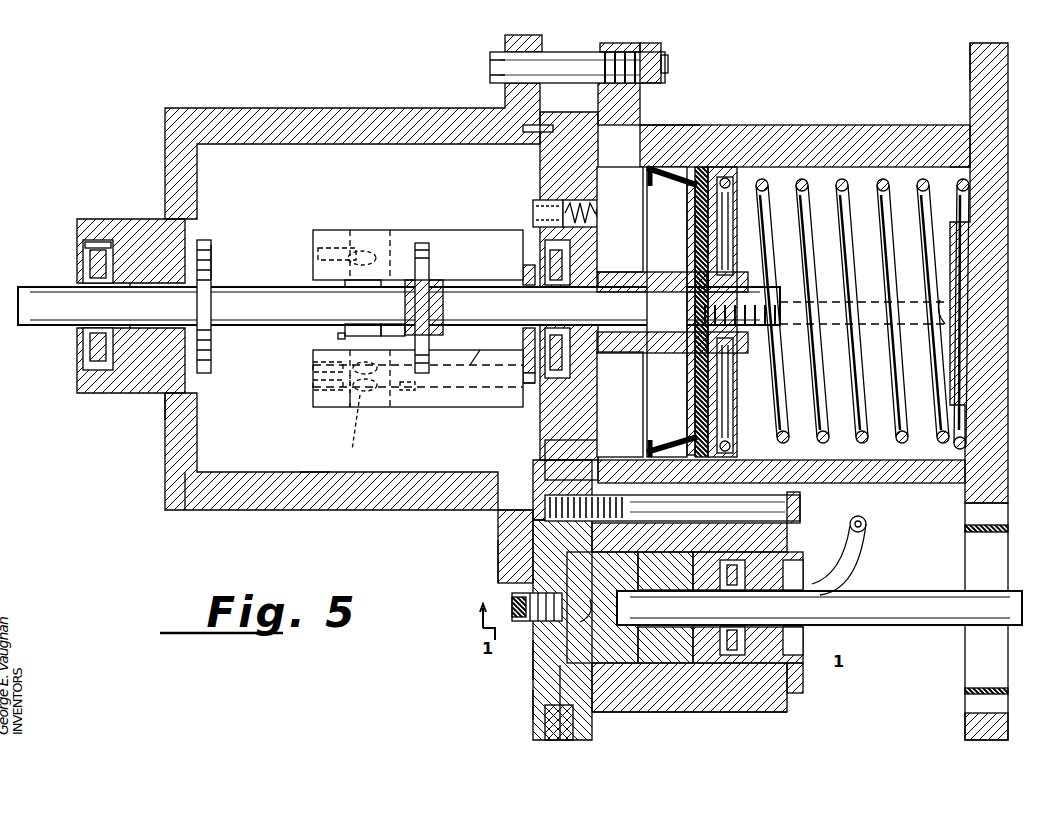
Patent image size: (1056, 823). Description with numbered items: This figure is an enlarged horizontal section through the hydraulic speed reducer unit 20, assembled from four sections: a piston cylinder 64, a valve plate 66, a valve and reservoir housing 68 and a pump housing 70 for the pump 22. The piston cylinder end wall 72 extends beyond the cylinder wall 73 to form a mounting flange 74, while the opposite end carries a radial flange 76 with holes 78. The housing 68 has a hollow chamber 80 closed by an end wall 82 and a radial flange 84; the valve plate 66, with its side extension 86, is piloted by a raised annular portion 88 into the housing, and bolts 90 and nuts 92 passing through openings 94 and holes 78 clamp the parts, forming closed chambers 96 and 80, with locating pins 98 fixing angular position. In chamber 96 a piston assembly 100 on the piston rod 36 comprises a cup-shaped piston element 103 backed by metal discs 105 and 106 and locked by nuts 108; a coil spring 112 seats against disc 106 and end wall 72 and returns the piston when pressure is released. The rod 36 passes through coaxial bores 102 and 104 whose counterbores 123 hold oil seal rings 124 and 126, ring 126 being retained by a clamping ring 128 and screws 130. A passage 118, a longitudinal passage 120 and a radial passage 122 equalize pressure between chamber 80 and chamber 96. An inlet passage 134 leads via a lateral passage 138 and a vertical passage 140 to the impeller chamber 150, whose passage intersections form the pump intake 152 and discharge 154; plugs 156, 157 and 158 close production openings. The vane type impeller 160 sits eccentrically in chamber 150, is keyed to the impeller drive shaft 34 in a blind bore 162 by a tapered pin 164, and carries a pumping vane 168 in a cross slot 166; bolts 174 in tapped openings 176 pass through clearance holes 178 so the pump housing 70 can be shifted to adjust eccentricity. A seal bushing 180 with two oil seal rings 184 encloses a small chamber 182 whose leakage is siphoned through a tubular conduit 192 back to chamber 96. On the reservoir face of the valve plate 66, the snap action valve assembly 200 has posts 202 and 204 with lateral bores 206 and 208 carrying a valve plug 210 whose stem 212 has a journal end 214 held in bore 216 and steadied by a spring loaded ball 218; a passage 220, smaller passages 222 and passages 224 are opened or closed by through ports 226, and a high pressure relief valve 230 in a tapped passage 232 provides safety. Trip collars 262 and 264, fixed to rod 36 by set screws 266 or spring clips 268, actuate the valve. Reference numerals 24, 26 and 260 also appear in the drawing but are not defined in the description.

The speed reducer unit 20 is at (606, 34).
The pump 22 is at (815, 717).
The spring housing 24 is at (737, 101).
The gear housing 26 is at (380, 100).
The impeller drive shaft 34 is at (915, 598).
The piston rod 36 is at (40, 324).
The piston cylinder 64 is at (805, 127).
The valve plate 66 is at (540, 172).
The valve and reservoir housing 68 is at (320, 495).
The pump housing 70 is at (740, 705).
The piston cylinder end wall 72 is at (1005, 150).
The cylinder wall 73 is at (750, 127).
The mounting flange 74 is at (970, 78).
The radial flange 76 is at (640, 108).
The holes 78 is at (615, 53).
The hollow chamber 80 is at (230, 458).
The end wall 82 is at (165, 415).
The radial flange 84 is at (498, 545).
The side extension 86 is at (533, 700).
The raised annular portion 88 is at (533, 470).
The bolts 90 is at (555, 53).
The nuts 92 is at (658, 45).
The openings 94 is at (522, 35).
The chamber 96 is at (880, 165).
The locating pins 98 is at (548, 124).
The piston assembly 100 is at (745, 395).
The bore 102 is at (585, 295).
The piston element 103 is at (660, 168).
The bore 104 is at (135, 285).
The metal disc 105 is at (695, 247).
The metal disc 106 is at (695, 405).
The nuts 108 is at (640, 355).
The coil spring 112 is at (830, 415).
The passage 118 is at (530, 310).
The longitudinal passage 120 is at (860, 300).
The radial passage 122 is at (948, 318).
The counterbores 123 is at (95, 240).
The oil seal ring 124 is at (83, 250).
The oil seal ring 126 is at (525, 262).
The clamping ring 128 is at (523, 378).
The screws 130 is at (528, 390).
The inlet passage 134 is at (555, 450).
The lateral passage 138 is at (498, 520).
The vertical passage 140 is at (540, 660).
The impeller chamber 150 is at (689, 687).
The pump intake 152 is at (582, 620).
The pump discharge 154 is at (616, 634).
The plug 156 is at (577, 702).
The plug 157 is at (545, 728).
The plug 158 is at (515, 546).
The pump impeller 160 is at (680, 685).
The blind bore 162 is at (665, 571).
The tapered pin 164 is at (654, 645).
The cross slot 166 is at (602, 607).
The pumping vane 168 is at (542, 622).
The bolts 174 is at (800, 507).
The tapped openings 176 is at (689, 537).
The holes 178 is at (790, 560).
The seal bushing 180 is at (795, 662).
The chamber 182 is at (750, 681).
The oil seal rings 184 is at (761, 607).
The tubular conduit 192 is at (868, 528).
The snap action valve assembly 200 is at (298, 412).
The post 202 is at (432, 407).
The post 204 is at (440, 230).
The lateral bore 206 is at (345, 400).
The lateral bore 208 is at (318, 252).
The valve plug 210 is at (378, 405).
The stem 212 is at (355, 326).
The cylindrical end portion 214 is at (390, 230).
The bore 216 is at (352, 230).
The spring loaded ball 218 is at (359, 264).
The passage 220 is at (470, 365).
The passages 222 is at (407, 395).
The passages 224 is at (313, 370).
The through ports 226 is at (350, 445).
The high pressure relief valve 230 is at (605, 205).
The tapped passage 232 is at (533, 212).
The collar 260 is at (338, 338).
The trip collar 262 is at (215, 255).
The trip collar 264 is at (430, 262).
The set screws 266 is at (215, 265).
The spring clips 268 is at (396, 337).